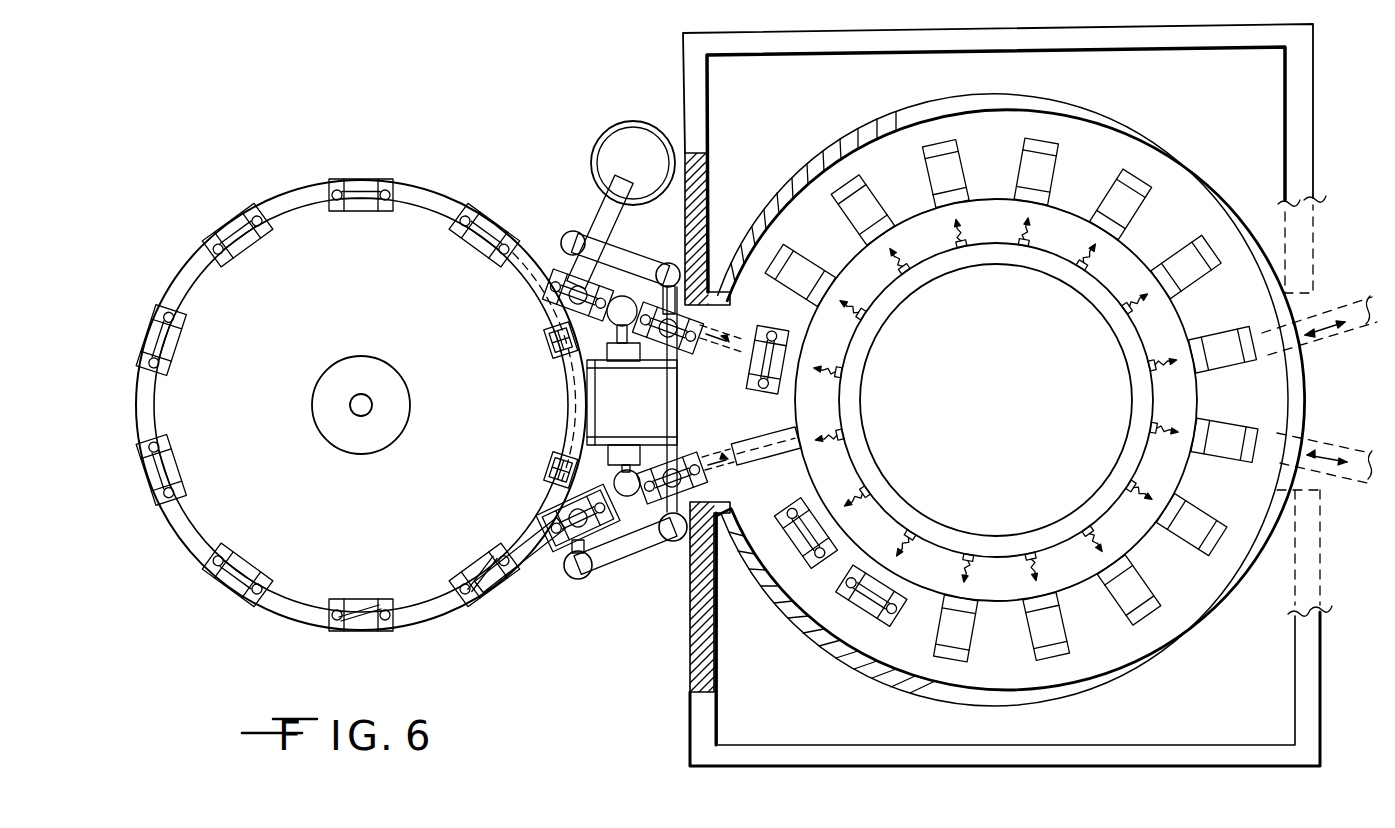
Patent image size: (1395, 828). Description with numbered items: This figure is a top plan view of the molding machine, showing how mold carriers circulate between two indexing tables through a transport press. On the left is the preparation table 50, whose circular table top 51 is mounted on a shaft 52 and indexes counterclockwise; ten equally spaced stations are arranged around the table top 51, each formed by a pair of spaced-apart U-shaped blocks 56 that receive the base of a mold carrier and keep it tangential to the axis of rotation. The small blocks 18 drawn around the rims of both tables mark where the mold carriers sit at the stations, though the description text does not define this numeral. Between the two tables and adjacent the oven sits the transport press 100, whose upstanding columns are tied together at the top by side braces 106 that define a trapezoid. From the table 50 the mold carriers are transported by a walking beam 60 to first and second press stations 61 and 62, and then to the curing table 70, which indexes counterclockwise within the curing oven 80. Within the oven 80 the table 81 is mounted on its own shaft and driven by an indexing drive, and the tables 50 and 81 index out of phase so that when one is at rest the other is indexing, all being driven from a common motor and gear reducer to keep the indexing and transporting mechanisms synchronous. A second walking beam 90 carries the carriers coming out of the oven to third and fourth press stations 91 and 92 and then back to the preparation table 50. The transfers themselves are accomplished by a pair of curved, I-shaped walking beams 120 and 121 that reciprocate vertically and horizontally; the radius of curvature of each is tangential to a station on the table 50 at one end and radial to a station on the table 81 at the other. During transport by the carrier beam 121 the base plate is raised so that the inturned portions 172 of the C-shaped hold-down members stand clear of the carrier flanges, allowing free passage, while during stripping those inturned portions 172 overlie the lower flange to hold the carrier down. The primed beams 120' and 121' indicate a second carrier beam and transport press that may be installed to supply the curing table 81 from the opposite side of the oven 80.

The article carrier 18 is at (545, 293).
The preparation table 50 is at (485, 410).
The circular table top 51 is at (324, 520).
The shaft 52 is at (370, 378).
The U-shaped blocks 56 is at (546, 342).
The walking beam 60 is at (527, 541).
The first press station 61 is at (602, 460).
The second press station 62 is at (660, 507).
The curing table 70 is at (903, 430).
The curing oven 80 is at (936, 766).
The table 81 is at (1031, 343).
The second walking beam 90 is at (615, 253).
The third press station 91 is at (718, 290).
The fourth press station 92 is at (573, 231).
The transport press 100 is at (603, 574).
The side braces 106 is at (632, 254).
The walking beam 120 is at (751, 472).
The walking beam 121 is at (731, 363).
The outlet chute 120' is at (1319, 340).
The outlet chute 121' is at (1324, 442).
The inturned portions 172 is at (548, 264).